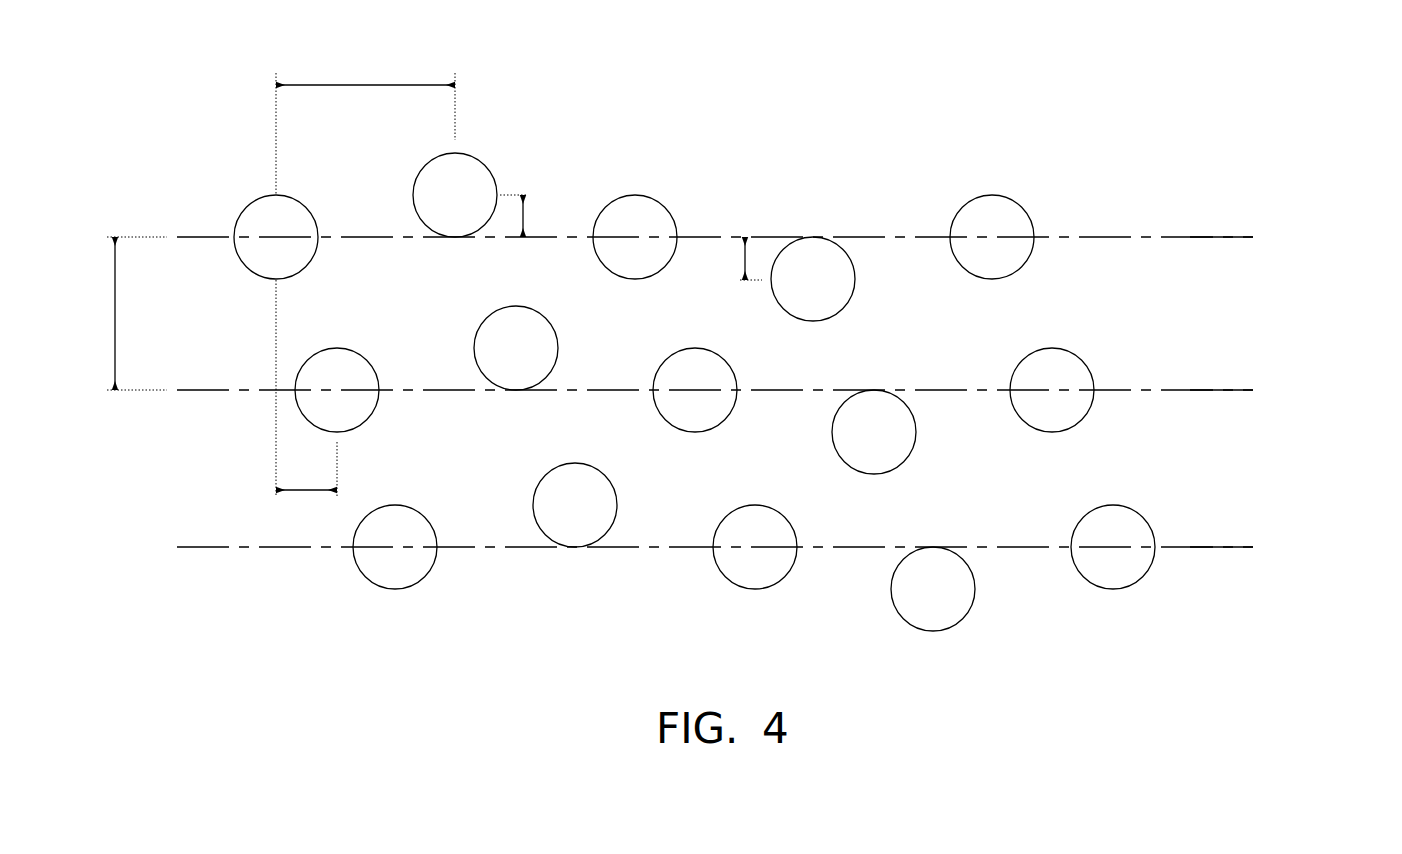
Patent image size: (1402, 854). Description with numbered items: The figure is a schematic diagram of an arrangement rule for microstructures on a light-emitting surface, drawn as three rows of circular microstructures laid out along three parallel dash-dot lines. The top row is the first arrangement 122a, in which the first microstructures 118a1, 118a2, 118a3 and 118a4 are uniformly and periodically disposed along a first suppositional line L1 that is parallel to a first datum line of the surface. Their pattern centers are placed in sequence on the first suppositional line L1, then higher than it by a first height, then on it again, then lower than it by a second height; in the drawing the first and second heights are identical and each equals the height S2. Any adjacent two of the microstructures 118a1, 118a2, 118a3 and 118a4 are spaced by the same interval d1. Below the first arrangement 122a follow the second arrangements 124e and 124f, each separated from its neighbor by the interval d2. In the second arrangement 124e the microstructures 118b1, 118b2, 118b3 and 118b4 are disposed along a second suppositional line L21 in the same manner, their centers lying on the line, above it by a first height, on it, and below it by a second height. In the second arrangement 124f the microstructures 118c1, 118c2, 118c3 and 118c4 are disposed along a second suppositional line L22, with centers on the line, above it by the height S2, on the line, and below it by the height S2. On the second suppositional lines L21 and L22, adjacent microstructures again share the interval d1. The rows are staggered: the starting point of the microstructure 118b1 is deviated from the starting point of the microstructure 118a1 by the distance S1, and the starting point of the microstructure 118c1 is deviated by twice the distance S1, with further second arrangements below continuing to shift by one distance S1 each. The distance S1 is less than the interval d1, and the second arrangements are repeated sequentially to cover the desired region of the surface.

The first microstructure 118a1 is at (1040, 183).
The first microstructure 118a2 is at (435, 160).
The first microstructure 118a3 is at (661, 202).
The first microstructure 118a4 is at (840, 312).
The first microstructure 118b1 is at (366, 358).
The first microstructure 118b2 is at (490, 316).
The first microstructure 118b3 is at (670, 357).
The first microstructure 118b4 is at (900, 465).
The first microstructure 118c1 is at (423, 514).
The first microstructure 118c2 is at (550, 472).
The first microstructure 118c3 is at (732, 510).
The first microstructure 118c4 is at (960, 622).
The first arrangement 122a is at (1289, 197).
The second arrangement 124e is at (1289, 353).
The second arrangement 124f is at (1286, 508).
The first suppositional line L1 is at (1244, 241).
The second suppositional line L21 is at (1248, 394).
The second suppositional line L22 is at (1248, 551).
The interval d1 is at (365, 275).
The interval d2 is at (120, 313).
The distance S1 is at (306, 469).
The height S2 is at (631, 237).